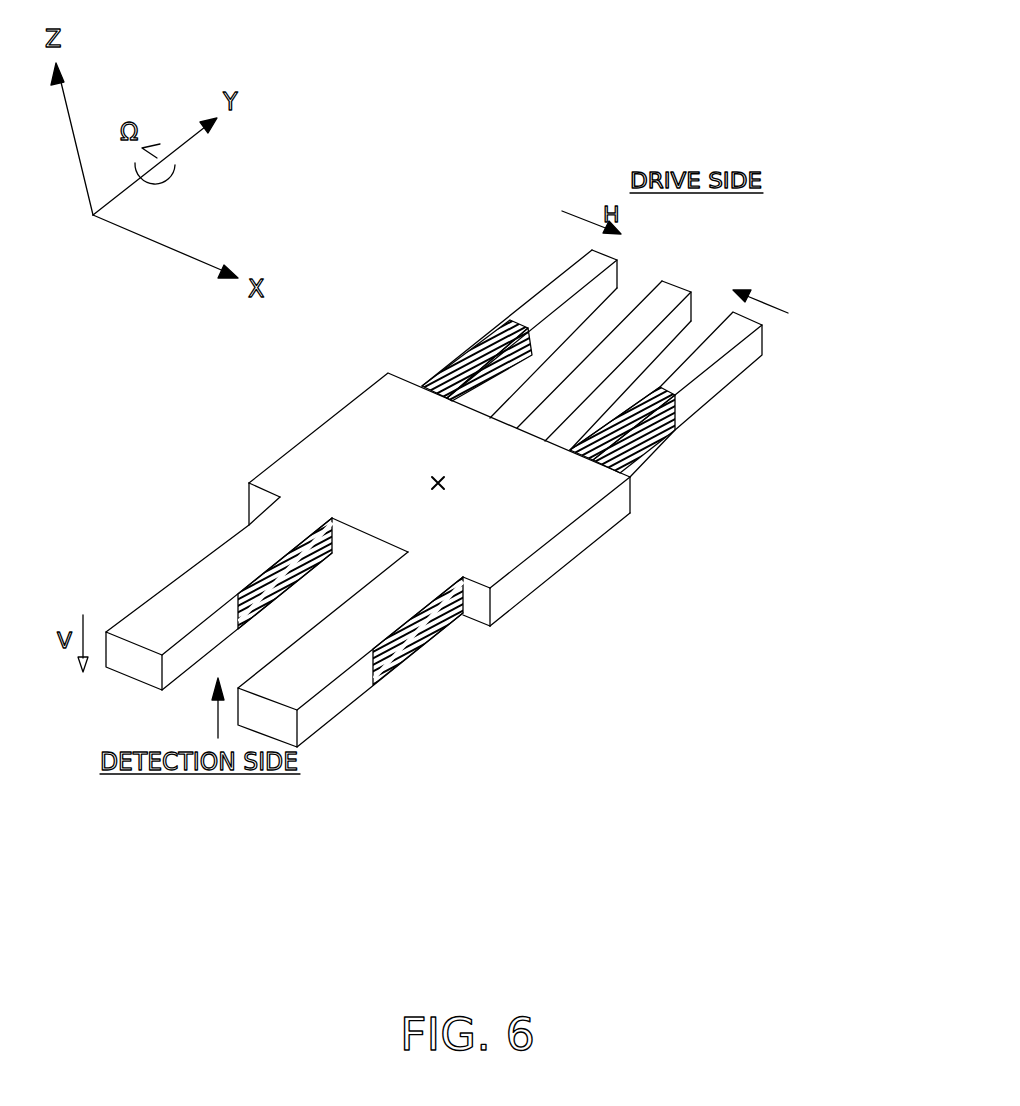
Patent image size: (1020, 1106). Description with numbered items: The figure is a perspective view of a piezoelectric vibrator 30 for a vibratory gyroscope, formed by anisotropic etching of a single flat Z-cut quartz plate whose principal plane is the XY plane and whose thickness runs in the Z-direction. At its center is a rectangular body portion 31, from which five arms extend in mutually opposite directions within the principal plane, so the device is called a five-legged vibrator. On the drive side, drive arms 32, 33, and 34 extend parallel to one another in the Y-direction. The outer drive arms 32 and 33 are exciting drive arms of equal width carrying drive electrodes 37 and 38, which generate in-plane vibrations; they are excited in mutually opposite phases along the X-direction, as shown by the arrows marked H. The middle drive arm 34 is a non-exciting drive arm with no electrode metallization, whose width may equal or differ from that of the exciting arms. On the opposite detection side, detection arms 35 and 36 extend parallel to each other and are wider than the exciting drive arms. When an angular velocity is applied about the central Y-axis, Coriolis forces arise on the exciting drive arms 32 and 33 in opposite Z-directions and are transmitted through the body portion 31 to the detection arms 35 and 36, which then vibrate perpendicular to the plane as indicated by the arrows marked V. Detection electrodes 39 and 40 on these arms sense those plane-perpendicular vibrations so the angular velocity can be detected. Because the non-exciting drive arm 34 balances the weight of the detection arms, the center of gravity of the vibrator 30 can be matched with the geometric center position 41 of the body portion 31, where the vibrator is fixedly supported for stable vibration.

The piezoelectric vibrator 30 is at (678, 92).
The body portion 31 is at (600, 527).
The drive arm 32 is at (580, 263).
The drive arm 33 is at (748, 342).
The drive arm 34 is at (680, 280).
The detection arm 35 is at (152, 677).
The detection arm 36 is at (318, 705).
The drive electrode 37 is at (500, 337).
The drive electrode 38 is at (648, 440).
The detection electrode 39 is at (283, 557).
The detection electrode 40 is at (420, 653).
The geometric center position 41 is at (435, 478).